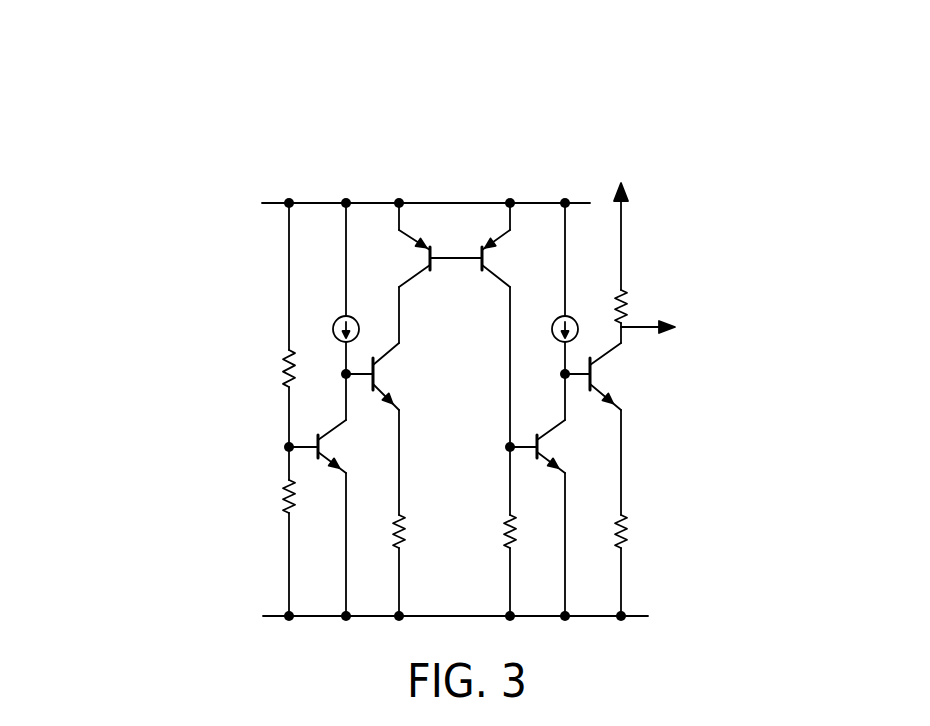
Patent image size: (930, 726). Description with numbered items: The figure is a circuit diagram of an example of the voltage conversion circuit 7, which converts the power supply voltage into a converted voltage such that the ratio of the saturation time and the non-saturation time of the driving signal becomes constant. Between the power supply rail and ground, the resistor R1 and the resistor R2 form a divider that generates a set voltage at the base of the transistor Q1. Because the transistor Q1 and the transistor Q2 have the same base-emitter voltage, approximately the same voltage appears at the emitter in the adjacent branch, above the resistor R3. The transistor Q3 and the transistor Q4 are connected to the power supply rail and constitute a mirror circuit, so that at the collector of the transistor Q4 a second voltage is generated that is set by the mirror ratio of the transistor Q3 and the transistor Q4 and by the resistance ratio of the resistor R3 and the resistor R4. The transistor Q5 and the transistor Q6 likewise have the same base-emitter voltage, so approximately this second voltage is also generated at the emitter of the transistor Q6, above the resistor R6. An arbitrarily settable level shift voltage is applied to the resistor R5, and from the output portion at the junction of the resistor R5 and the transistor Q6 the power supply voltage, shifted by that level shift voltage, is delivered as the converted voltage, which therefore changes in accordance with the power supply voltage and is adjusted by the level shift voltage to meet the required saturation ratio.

The voltage conversion circuit 7 is at (406, 118).
The resistor R1 is at (272, 325).
The resistor R2 is at (272, 531).
The resistor R3 is at (385, 513).
The resistor R4 is at (494, 531).
The resistor R5 is at (604, 263).
The resistor R6 is at (604, 513).
The transistor Q1 is at (327, 518).
The transistor Q2 is at (386, 376).
The transistor Q3 is at (429, 273).
The transistor Q4 is at (502, 325).
The transistor Q5 is at (546, 518).
The transistor Q6 is at (601, 376).